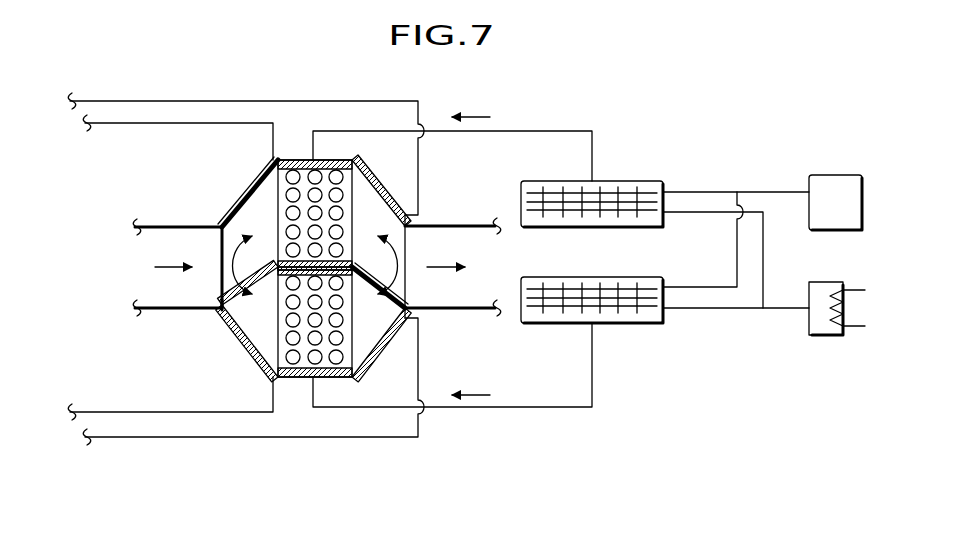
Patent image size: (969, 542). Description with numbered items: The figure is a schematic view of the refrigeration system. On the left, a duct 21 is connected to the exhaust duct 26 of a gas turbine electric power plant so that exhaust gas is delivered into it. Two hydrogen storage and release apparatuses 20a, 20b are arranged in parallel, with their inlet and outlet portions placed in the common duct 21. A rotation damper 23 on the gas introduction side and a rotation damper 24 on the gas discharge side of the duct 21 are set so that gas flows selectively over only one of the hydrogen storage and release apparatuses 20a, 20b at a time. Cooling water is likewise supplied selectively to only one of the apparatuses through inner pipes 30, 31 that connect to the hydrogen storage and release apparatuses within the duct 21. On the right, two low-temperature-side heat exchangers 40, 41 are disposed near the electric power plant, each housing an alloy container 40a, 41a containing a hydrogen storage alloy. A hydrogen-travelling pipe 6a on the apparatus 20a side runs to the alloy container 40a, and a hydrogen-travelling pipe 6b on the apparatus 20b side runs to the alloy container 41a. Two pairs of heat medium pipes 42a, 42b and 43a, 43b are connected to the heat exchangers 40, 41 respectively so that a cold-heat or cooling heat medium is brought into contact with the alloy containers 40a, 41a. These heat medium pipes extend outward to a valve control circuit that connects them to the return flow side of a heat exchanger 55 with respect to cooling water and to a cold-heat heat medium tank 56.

The hydrogen-travelling pipe 6a is at (527, 129).
The hydrogen-travelling pipe 6b is at (537, 407).
The hydrogen storage and release apparatus 20a is at (355, 207).
The hydrogen storage and release apparatus 20b is at (276, 322).
The duct 21 is at (210, 194).
The rotation damper 23 is at (219, 298).
The rotation damper 24 is at (405, 288).
The exhaust duct 26 is at (148, 309).
The inner pipe 30 is at (180, 101).
The inner pipe 31 is at (245, 437).
The low-temperature-side heat exchanger 40 is at (604, 164).
The alloy container 40a is at (595, 192).
The low-temperature-side heat exchanger 41 is at (598, 345).
The alloy container 41a is at (607, 312).
The heat medium pipe 42a is at (720, 192).
The heat medium pipe 42b is at (708, 213).
The heat medium pipe 43a is at (738, 302).
The heat medium pipe 43b is at (706, 309).
The heat exchanger 55 is at (823, 336).
The cold-heat heat medium tank 56 is at (841, 175).